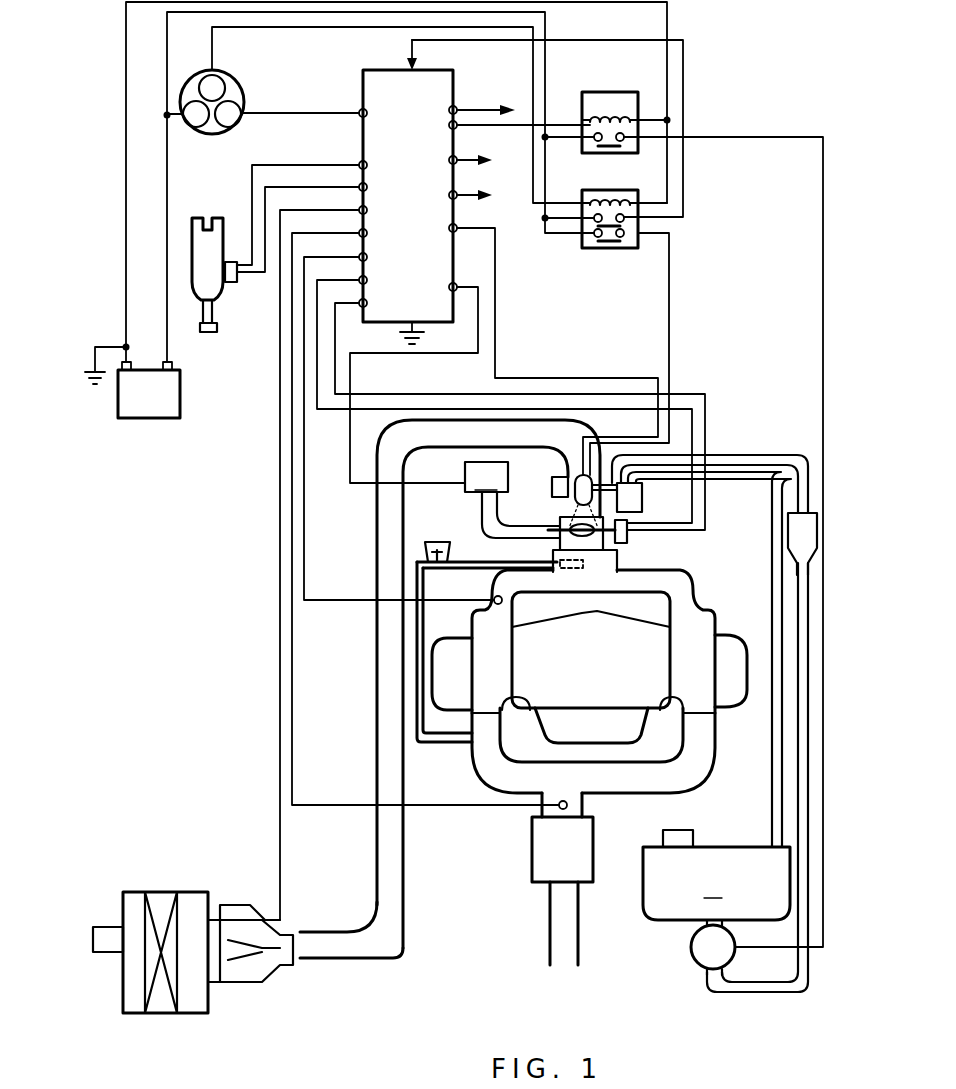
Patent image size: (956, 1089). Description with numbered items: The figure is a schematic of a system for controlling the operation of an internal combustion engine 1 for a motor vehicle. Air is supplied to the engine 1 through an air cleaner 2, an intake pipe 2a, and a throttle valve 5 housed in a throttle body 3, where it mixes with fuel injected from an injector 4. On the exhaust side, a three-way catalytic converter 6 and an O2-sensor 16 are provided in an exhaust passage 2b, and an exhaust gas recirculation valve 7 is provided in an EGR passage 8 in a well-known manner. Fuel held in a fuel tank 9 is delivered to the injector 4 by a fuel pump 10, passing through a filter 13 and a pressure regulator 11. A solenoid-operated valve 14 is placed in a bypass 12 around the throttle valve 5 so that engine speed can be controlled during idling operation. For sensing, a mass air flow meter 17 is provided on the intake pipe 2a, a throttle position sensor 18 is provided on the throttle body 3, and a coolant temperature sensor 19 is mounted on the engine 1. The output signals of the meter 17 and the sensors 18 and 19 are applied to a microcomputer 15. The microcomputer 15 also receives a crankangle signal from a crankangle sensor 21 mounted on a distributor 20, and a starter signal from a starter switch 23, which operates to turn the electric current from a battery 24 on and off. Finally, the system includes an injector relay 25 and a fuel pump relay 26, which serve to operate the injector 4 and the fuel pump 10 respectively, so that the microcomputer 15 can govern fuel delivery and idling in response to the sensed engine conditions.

The internal combustion engine 1 is at (695, 586).
The air cleaner 2 is at (184, 892).
The intake pipe 2a is at (395, 946).
The exhaust passage 2b is at (592, 806).
The throttle body 3 is at (572, 480).
The injector 4 is at (556, 492).
The throttle valve 5 is at (590, 538).
The three-way catalytic converter 6 is at (532, 852).
The exhaust gas recirculation (EGR) valve 7 is at (437, 542).
The EGR passage 8 is at (432, 746).
The fuel tank 9 is at (709, 696).
The fuel pump 10 is at (691, 960).
The pressure regulator 11 is at (642, 497).
The bypass 12 is at (470, 530).
The filter 13 is at (788, 531).
The solenoid-operated valve 14 is at (486, 477).
The microcomputer 15 is at (363, 72).
The O2-sensor 16 is at (566, 802).
The mass air flow meter 17 is at (240, 905).
The throttle position sensor 18 is at (630, 540).
The coolant temperature sensor 19 is at (494, 604).
The distributor 20 is at (190, 260).
The crankangle sensor 21 is at (237, 278).
The starter switch 23 is at (244, 82).
The battery 24 is at (180, 394).
The injector relay 25 is at (612, 248).
The fuel pump relay 26 is at (600, 92).